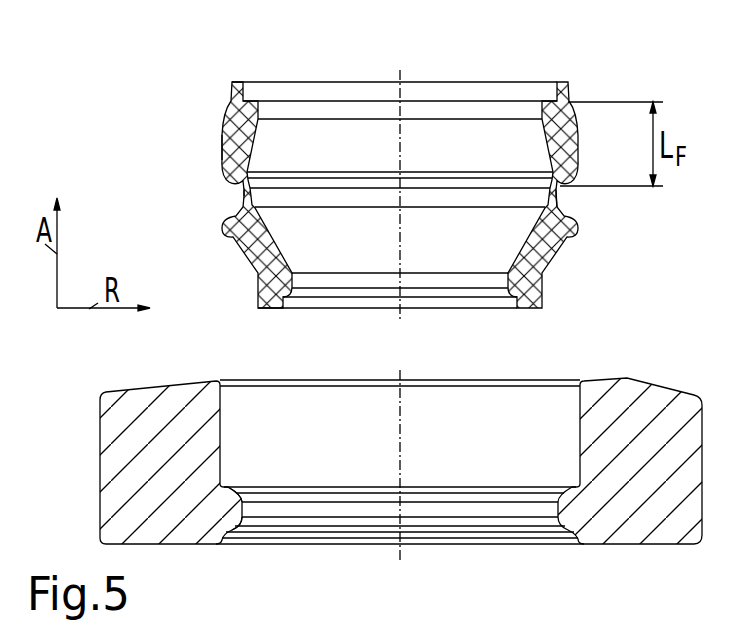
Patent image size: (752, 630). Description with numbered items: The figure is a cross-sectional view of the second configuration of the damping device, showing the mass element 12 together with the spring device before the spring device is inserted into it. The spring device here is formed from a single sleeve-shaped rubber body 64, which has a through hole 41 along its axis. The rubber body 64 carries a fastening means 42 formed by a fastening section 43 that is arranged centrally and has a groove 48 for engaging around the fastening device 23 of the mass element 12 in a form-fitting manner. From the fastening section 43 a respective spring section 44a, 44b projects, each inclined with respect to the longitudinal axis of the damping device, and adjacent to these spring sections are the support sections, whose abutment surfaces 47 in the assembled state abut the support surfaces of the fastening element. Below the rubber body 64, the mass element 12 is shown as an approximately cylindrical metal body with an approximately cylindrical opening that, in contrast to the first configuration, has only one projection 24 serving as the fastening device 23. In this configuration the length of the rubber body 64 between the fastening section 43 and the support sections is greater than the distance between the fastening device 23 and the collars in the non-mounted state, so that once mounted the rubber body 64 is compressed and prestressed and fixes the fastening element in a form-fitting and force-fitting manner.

The mass element 12 is at (648, 405).
The fastening device 23 is at (235, 530).
The projection 24 is at (232, 500).
The through hole 41 is at (500, 140).
The fastening means 42 is at (562, 198).
The fastening section 43 is at (560, 207).
The spring section 44a is at (230, 120).
The spring section 44b is at (267, 250).
The abutment surface 47 is at (277, 300).
The groove 48 is at (241, 201).
The rubber body 64 is at (208, 147).